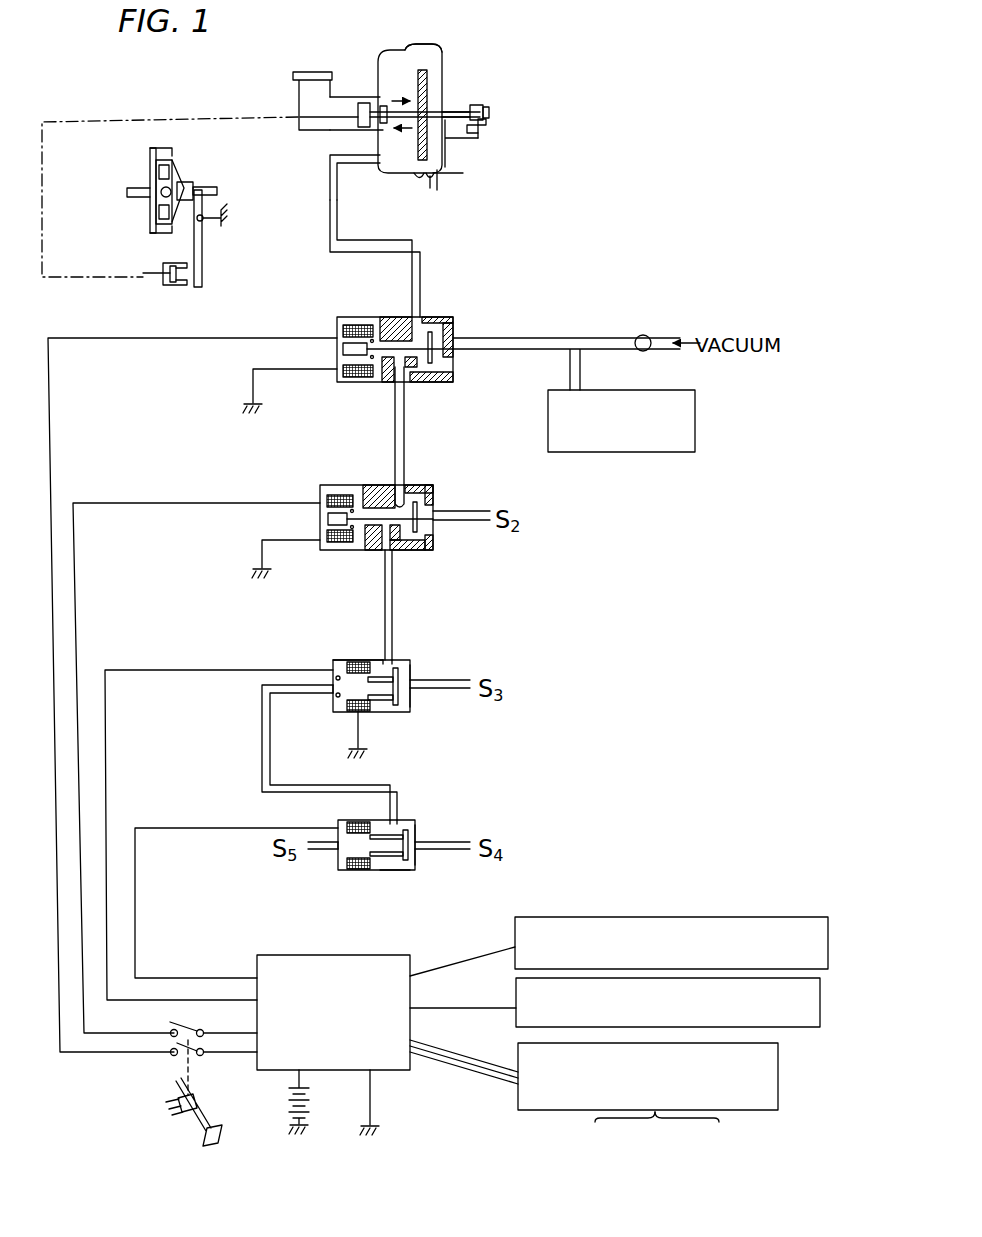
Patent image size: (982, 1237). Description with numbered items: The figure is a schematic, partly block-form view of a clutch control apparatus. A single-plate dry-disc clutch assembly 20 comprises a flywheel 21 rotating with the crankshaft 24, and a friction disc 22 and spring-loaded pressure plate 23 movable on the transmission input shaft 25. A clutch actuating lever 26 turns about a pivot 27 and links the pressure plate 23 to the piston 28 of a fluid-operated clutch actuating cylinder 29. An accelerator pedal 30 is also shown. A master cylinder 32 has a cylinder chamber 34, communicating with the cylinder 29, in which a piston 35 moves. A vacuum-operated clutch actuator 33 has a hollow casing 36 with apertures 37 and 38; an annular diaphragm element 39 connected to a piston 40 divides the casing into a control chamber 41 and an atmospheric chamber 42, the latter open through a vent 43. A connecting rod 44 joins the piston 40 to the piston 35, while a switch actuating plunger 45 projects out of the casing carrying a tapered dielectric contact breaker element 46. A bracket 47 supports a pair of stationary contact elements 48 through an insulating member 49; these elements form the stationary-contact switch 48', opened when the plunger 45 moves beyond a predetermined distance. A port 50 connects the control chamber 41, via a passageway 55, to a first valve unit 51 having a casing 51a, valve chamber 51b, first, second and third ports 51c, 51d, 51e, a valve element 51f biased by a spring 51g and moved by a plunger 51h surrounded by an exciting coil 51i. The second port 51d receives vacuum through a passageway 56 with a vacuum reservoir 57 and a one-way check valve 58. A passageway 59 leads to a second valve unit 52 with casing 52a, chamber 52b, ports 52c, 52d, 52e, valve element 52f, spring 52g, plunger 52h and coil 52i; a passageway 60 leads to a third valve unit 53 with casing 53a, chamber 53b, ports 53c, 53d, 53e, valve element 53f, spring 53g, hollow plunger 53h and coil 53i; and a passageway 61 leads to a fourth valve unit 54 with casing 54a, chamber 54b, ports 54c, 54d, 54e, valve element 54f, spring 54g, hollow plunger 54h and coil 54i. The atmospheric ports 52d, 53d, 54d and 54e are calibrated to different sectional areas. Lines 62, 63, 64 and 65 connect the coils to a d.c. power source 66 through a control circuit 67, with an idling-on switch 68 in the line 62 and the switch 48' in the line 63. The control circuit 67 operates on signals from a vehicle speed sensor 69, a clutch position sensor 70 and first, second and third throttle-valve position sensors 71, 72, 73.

The clutch assembly 20 is at (149, 180).
The flywheel 21 is at (152, 215).
The friction disc 22 is at (156, 232).
The pressure plate 23 is at (180, 176).
The crankshaft 24 is at (127, 192).
The transmission input shaft 25 is at (217, 191).
The clutch actuating lever 26 is at (203, 270).
The pivot 27 is at (204, 222).
The piston 28 is at (200, 292).
The clutch actuating cylinder 29 is at (176, 290).
The accelerator pedal 30 is at (211, 1133).
The master cylinder 32 is at (306, 72).
The vacuum-operated clutch actuator 33 is at (386, 49).
The cylinder chamber 34 is at (331, 131).
The piston 35 is at (358, 106).
The hollow casing 36 is at (425, 46).
The aperture 37 is at (381, 111).
The aperture 38 is at (446, 112).
The annular diaphragm element 39 is at (427, 186).
The piston 40 is at (429, 76).
The control chamber 41 is at (418, 180).
The atmospheric chamber 42 is at (439, 189).
The vent 43 is at (463, 174).
The connecting rod 44 is at (385, 121).
The switch actuating plunger 45 is at (481, 106).
The contact breaker element 46 is at (490, 112).
The bracket 47 is at (472, 135).
The stationary contact elements 48 is at (519, 129).
The stationary-contact switch 48' is at (213, 1017).
The insulating member 49 is at (479, 135).
The port 50 is at (382, 163).
The first valve unit 51 is at (393, 353).
The casing 51a is at (394, 317).
The valve chamber 51b is at (454, 329).
The first port 51c is at (425, 318).
The second port 51d is at (455, 352).
The third port 51e is at (392, 385).
The valve element 51f is at (451, 379).
The helical compression spring 51g is at (372, 322).
The solenoid-operated plunger 51h is at (343, 348).
The exciting coil 51i is at (350, 379).
The second valve unit 52 is at (381, 518).
The casing 52a is at (379, 485).
The valve chamber 52b is at (437, 495).
The first port 52c is at (406, 488).
The second port 52d is at (436, 523).
The third port 52e is at (381, 551).
The valve element 52f is at (432, 548).
The helical compression spring 52g is at (403, 551).
The solenoid-operated plunger 52h is at (328, 513).
The exciting coil 52i is at (340, 545).
The third valve unit 53 is at (410, 686).
The casing 53a is at (379, 660).
The valve chamber 53b is at (386, 676).
The first port 53c is at (394, 661).
The second port 53d is at (408, 690).
The third port 53e is at (334, 692).
The valve element 53f is at (403, 713).
The helical compression spring 53g is at (347, 713).
The solenoid-operated hollow plunger 53h is at (386, 702).
The exciting coil 53i is at (345, 660).
The fourth valve unit 54 is at (402, 845).
The casing 54a is at (390, 871).
The valve chamber 54b is at (401, 863).
The first port 54c is at (398, 819).
The second port 54d is at (419, 848).
The third port 54e is at (338, 851).
The valve element 54f is at (416, 833).
The helical compression spring 54g is at (341, 836).
The solenoid-operated hollow plunger 54h is at (386, 834).
The exciting coil 54i is at (350, 871).
The passageway 55 is at (422, 251).
The passageway 56 is at (578, 338).
The vacuum reservoir 57 is at (640, 453).
The one-way check valve 58 is at (644, 335).
The passageway 59 is at (407, 422).
The passageway 60 is at (392, 608).
The passageway 61 is at (262, 733).
The line 62 is at (50, 433).
The line 63 is at (75, 572).
The line 64 is at (106, 732).
The line 65 is at (136, 914).
The d.c. power source 66 is at (306, 1104).
The control circuit 67 is at (271, 955).
The idling-on switch 68 is at (188, 1062).
The vehicle speed sensor 69 is at (622, 917).
The clutch position sensor 70 is at (516, 997).
The first throttle-valve position sensor 71 is at (719, 1122).
The second throttle-valve position sensor 72 is at (625, 1117).
The third throttle-valve position sensor 73 is at (687, 1117).